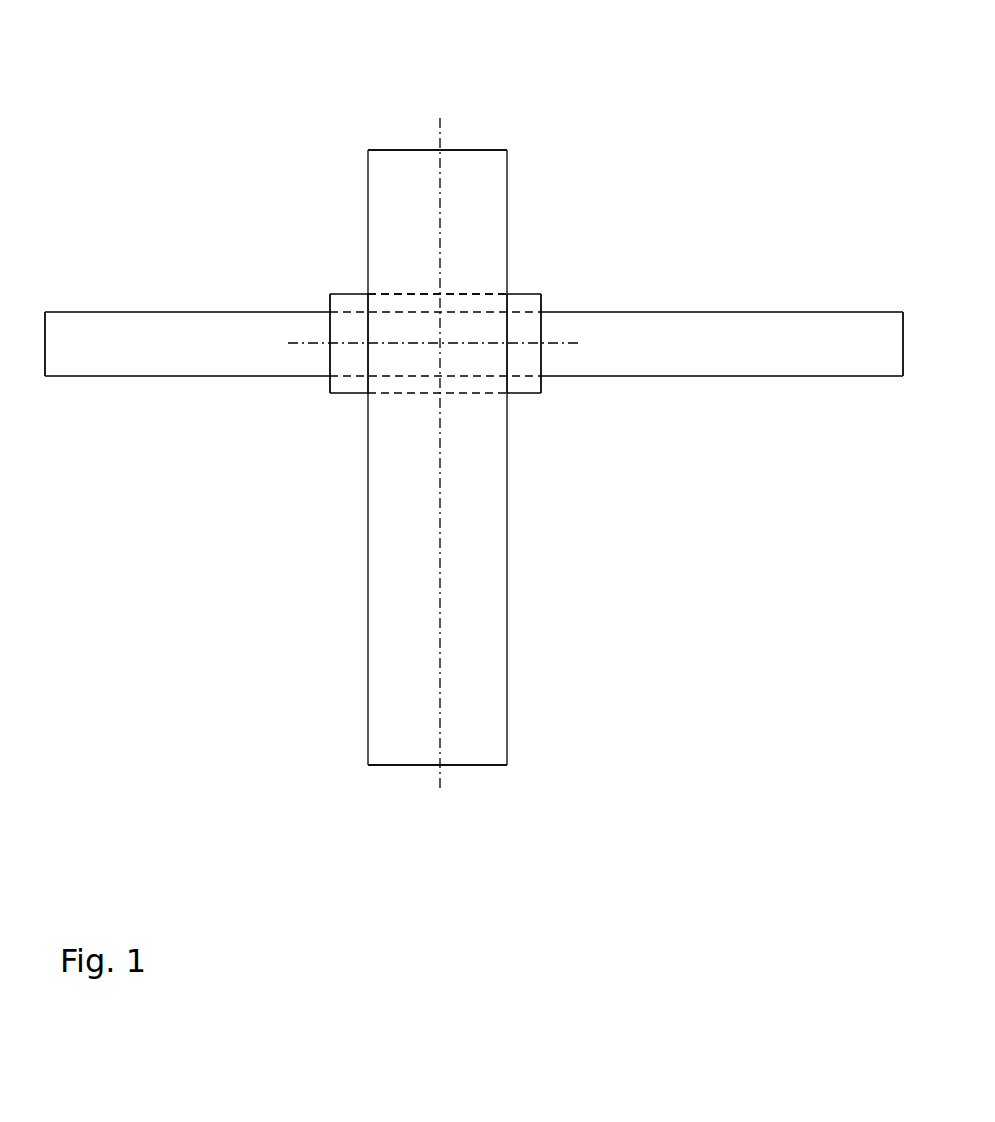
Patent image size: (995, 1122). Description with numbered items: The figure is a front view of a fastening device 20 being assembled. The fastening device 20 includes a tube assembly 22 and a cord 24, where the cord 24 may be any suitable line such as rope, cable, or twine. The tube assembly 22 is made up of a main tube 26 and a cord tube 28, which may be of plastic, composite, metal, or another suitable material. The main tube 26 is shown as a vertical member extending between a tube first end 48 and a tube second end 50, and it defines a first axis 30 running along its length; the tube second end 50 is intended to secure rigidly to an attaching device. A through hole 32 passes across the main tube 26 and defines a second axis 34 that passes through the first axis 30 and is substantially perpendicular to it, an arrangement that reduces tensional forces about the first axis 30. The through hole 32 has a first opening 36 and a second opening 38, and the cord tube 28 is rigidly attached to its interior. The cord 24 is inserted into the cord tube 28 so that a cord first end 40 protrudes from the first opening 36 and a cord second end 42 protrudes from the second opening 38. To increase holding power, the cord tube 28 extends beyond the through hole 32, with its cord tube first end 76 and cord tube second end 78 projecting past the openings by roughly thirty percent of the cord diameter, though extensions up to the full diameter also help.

The fastening device 20 is at (236, 135).
The tube assembly 22 is at (300, 818).
The cord 24 is at (165, 354).
The main tube 26 is at (396, 574).
The cord tube 28 is at (530, 302).
The first axis 30 is at (440, 140).
The through hole 32 is at (410, 292).
The second axis 34 is at (560, 340).
The first opening 36 is at (368, 359).
The second opening 38 is at (507, 358).
The cord first end 40 is at (95, 367).
The cord second end 42 is at (800, 367).
The tube first end 48 is at (488, 200).
The tube second end 50 is at (490, 723).
The cord tube first end 76 is at (330, 359).
The cord tube second end 78 is at (542, 359).